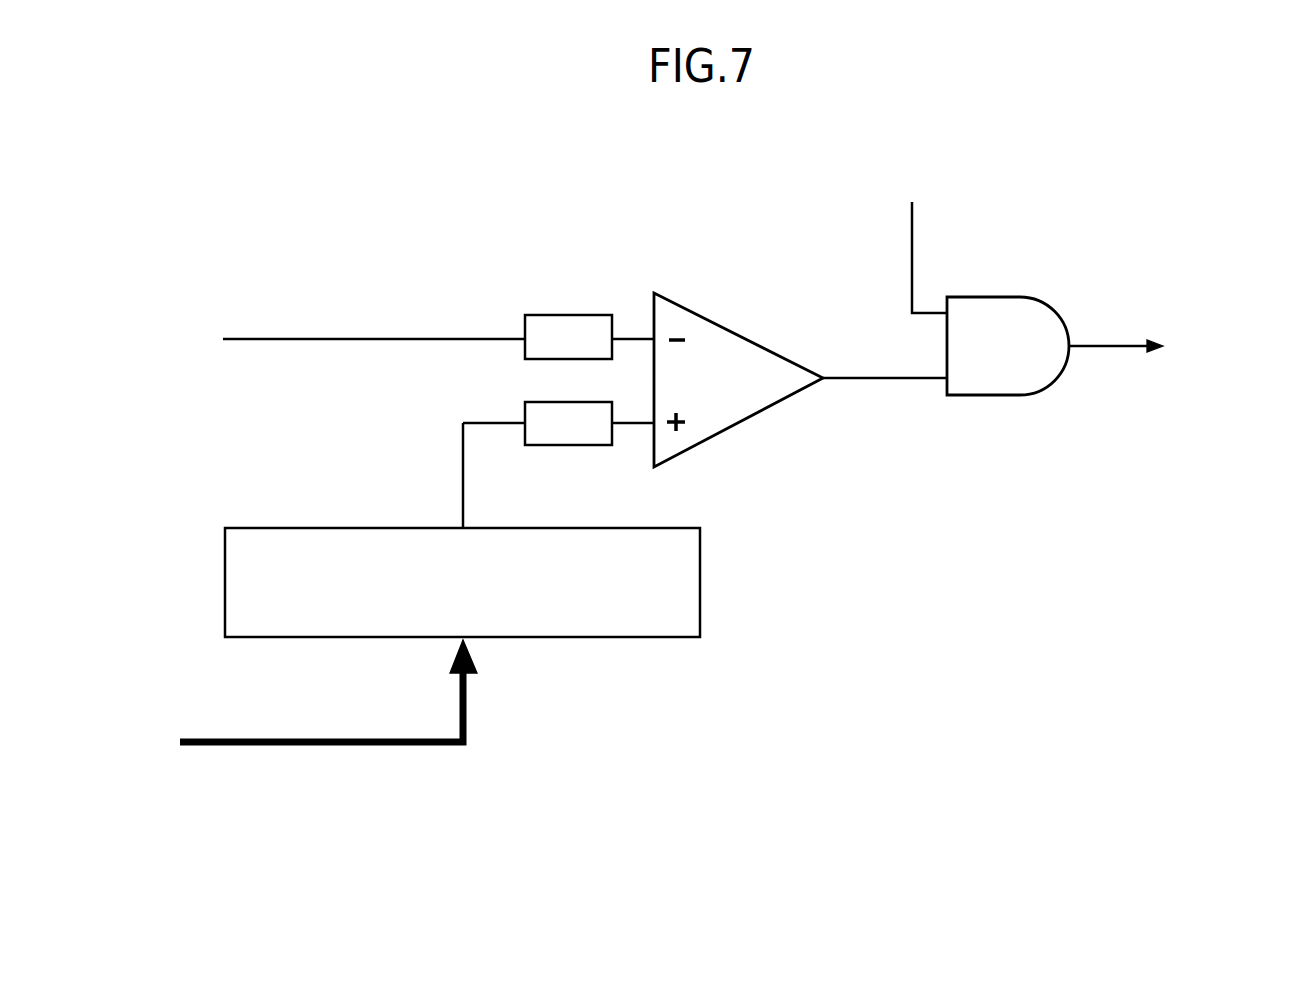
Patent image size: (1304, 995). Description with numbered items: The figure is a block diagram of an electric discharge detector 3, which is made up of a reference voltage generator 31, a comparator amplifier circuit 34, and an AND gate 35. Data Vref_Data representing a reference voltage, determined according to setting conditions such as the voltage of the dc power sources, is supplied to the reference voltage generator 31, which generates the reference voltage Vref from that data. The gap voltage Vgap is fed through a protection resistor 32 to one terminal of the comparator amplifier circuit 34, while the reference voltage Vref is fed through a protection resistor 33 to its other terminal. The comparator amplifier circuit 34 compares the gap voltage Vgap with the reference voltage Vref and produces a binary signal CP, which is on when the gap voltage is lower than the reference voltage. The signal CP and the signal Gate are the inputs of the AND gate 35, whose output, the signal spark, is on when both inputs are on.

The electric discharge detector 3 is at (727, 504).
The reference voltage generator 31 is at (700, 612).
The protection resistor 32 is at (565, 315).
The protection resistor 33 is at (582, 445).
The comparator amplifier circuit 34 is at (730, 428).
The AND gate 35 is at (1033, 297).